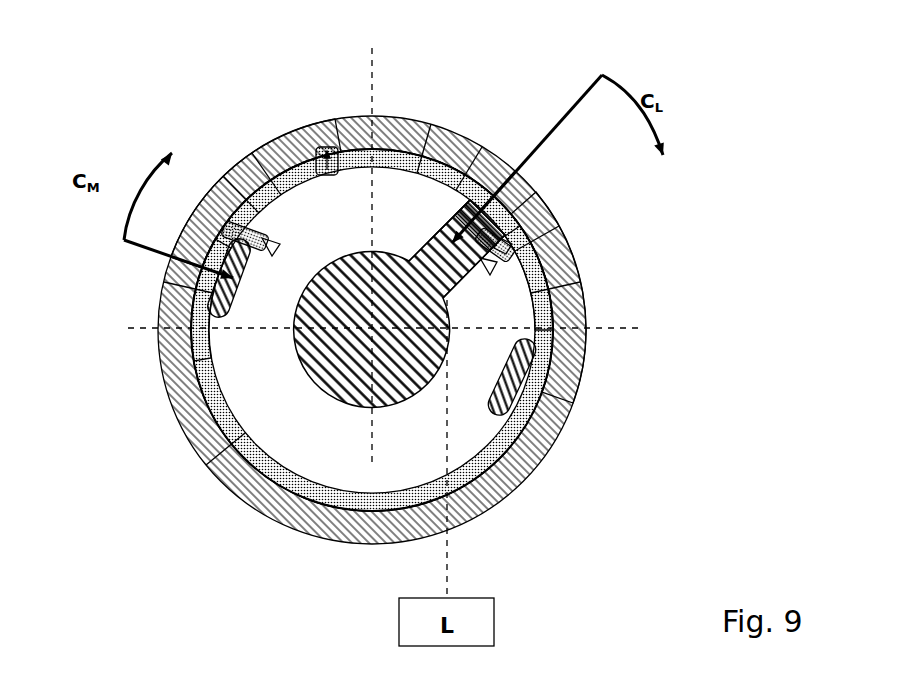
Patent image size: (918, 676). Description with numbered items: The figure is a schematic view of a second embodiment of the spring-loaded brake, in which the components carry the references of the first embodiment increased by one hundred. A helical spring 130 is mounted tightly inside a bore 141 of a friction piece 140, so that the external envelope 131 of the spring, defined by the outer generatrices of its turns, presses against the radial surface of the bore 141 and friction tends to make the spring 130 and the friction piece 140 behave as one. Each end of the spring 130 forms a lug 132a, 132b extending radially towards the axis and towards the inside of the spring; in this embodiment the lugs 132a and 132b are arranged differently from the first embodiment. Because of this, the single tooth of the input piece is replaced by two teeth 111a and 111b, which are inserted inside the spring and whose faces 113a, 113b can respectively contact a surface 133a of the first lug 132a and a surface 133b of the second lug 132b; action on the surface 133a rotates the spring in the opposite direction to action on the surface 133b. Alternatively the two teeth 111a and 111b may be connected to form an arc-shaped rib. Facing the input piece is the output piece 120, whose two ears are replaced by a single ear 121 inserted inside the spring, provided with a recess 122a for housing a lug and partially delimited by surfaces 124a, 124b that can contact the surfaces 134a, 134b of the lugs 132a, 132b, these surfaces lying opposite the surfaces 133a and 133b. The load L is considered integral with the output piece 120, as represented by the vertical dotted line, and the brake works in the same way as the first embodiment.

The tooth 111a is at (212, 308).
The tooth 111b is at (525, 373).
The face of tooth 113a is at (230, 175).
The face of tooth 113b is at (588, 318).
The output piece 120 is at (323, 382).
The ear 121 is at (412, 250).
The recess 122a is at (440, 190).
The surface of recess 124a is at (465, 185).
The surface of recess 124b is at (535, 225).
The helical spring 130 is at (248, 457).
The external envelope of the spring 131 is at (273, 492).
The lug 132a is at (270, 243).
The lug 132b is at (490, 268).
The surface of lug 133a is at (215, 300).
The surface of lug 133b is at (558, 250).
The surface of lug 134a is at (264, 226).
The surface of lug 134b is at (520, 214).
The friction piece 140 is at (180, 392).
The bore 141 is at (328, 145).